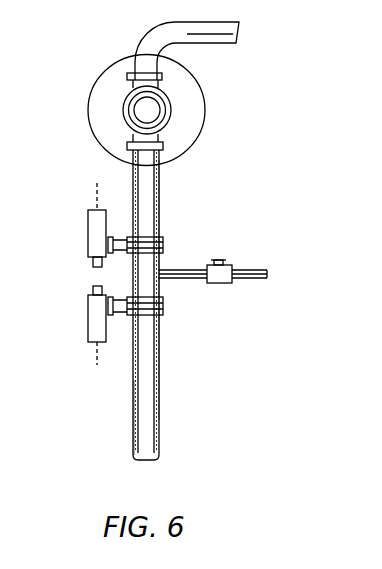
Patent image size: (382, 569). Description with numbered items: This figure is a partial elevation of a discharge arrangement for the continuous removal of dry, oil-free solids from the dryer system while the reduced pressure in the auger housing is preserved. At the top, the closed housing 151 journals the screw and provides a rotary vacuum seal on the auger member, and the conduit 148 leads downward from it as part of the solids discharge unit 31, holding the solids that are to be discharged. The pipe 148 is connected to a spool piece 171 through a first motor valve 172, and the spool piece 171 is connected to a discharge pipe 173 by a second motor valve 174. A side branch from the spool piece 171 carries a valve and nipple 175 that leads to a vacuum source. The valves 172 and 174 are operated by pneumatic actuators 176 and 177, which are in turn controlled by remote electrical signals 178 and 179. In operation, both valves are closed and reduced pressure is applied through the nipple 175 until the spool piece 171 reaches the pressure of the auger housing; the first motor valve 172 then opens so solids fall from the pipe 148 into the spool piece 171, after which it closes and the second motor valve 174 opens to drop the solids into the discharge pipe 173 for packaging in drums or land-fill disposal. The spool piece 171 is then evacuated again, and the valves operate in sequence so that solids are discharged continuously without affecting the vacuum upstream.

The closed housing 151 is at (136, 106).
The conduit 148 is at (148, 178).
The solids discharge unit 31 is at (160, 193).
The first motor valve 172 is at (156, 237).
The spool piece 171 is at (158, 266).
The nipple 175 is at (194, 279).
The second motor valve 174 is at (163, 316).
The discharge pipe 173 is at (160, 405).
The remote electrical signal 178 is at (95, 190).
The pneumatic actuator 176 is at (88, 240).
The pneumatic actuator 177 is at (88, 313).
The remote electrical signal 179 is at (96, 362).